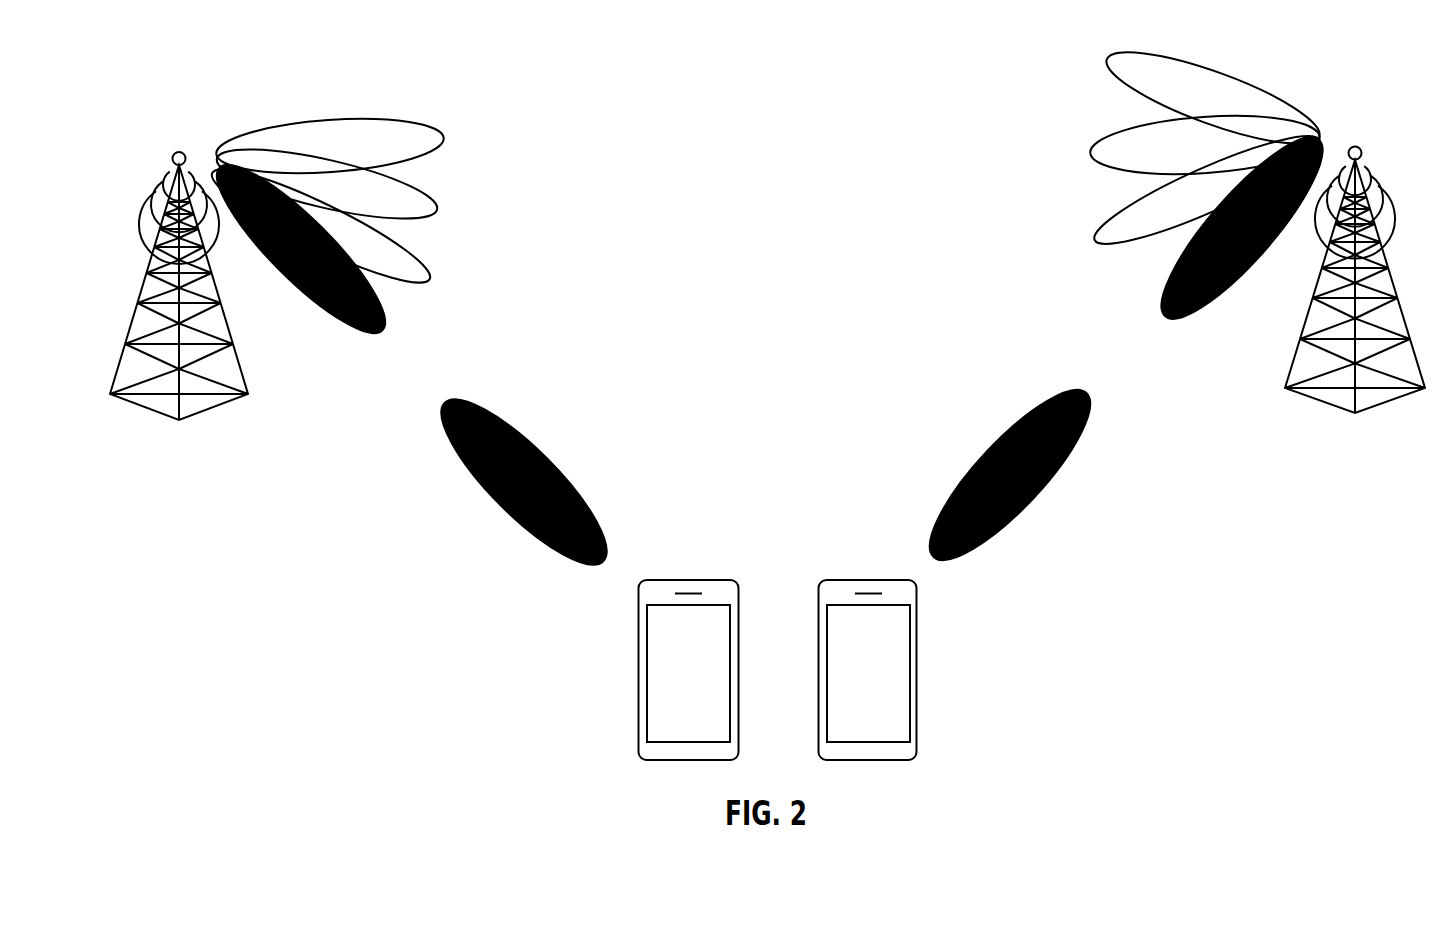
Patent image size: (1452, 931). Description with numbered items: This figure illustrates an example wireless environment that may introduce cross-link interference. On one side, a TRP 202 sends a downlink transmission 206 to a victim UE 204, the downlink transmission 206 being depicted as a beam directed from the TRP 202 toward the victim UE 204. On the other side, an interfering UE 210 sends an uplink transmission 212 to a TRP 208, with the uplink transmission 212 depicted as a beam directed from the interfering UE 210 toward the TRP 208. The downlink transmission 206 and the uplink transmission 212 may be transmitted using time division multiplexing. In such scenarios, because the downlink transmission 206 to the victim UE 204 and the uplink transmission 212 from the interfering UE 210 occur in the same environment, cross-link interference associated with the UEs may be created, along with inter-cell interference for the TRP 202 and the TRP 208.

The TRP 202 is at (137, 407).
The victim UE 204 is at (638, 668).
The downlink transmission 206 is at (480, 477).
The TRP 208 is at (1392, 400).
The interfering UE 210 is at (917, 670).
The uplink transmission 212 is at (976, 456).